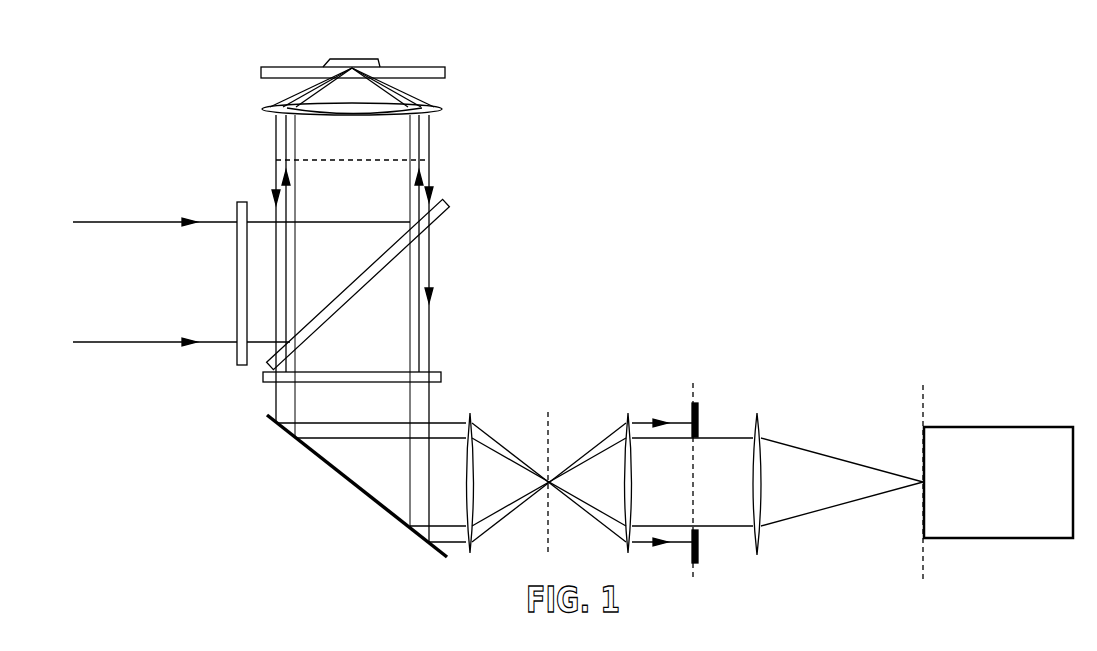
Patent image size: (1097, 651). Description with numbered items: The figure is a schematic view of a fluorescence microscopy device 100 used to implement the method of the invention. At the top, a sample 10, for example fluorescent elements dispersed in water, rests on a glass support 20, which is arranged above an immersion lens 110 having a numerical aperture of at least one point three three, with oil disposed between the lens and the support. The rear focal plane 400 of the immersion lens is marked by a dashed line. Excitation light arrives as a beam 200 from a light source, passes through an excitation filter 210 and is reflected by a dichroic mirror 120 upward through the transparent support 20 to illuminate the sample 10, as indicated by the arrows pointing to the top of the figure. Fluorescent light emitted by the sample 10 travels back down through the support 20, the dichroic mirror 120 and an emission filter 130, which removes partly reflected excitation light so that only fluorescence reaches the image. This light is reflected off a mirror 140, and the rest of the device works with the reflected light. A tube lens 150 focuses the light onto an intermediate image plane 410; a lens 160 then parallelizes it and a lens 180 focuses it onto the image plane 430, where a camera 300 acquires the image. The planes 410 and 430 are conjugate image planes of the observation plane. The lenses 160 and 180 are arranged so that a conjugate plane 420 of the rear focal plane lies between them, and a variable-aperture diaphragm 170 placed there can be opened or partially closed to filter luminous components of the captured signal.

The sample 10 is at (369, 62).
The glass support 20 is at (430, 72).
The fluorescence microscopy device 100 is at (466, 306).
The immersion lens 110 is at (435, 107).
The dichroic mirror 120 is at (448, 203).
The emission filter 130 is at (266, 377).
The mirror 140 is at (307, 449).
The tube lens 150 is at (471, 413).
The lens 160 is at (626, 413).
The variable-aperture diaphragm 170 is at (699, 413).
The lens 180 is at (759, 413).
The beam 200 is at (128, 243).
The excitation filter 210 is at (242, 357).
The camera 300 is at (1047, 425).
The rear focal plane 400 is at (431, 160).
The intermediate image plane 410 is at (551, 437).
The conjugate plane 420 is at (695, 568).
The image plane 430 is at (921, 401).